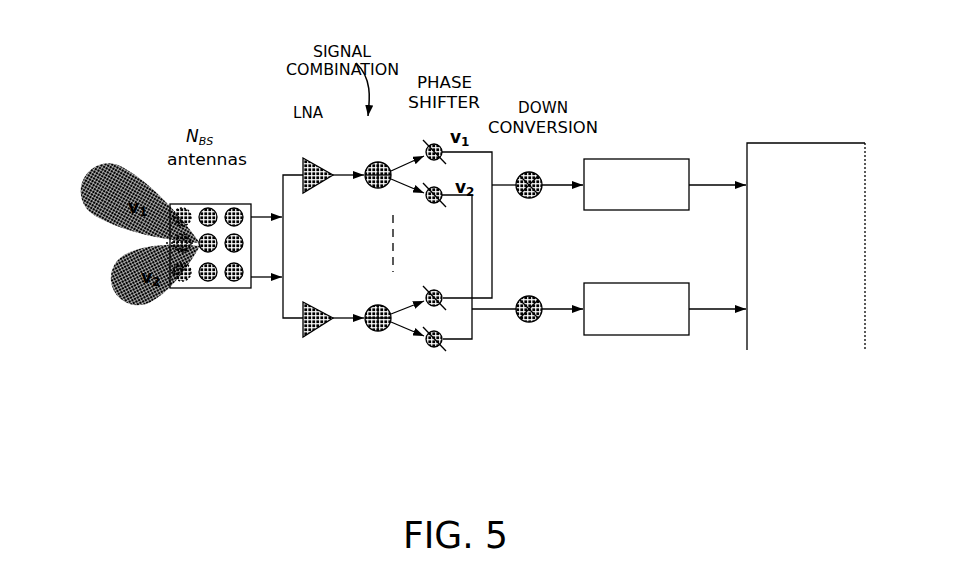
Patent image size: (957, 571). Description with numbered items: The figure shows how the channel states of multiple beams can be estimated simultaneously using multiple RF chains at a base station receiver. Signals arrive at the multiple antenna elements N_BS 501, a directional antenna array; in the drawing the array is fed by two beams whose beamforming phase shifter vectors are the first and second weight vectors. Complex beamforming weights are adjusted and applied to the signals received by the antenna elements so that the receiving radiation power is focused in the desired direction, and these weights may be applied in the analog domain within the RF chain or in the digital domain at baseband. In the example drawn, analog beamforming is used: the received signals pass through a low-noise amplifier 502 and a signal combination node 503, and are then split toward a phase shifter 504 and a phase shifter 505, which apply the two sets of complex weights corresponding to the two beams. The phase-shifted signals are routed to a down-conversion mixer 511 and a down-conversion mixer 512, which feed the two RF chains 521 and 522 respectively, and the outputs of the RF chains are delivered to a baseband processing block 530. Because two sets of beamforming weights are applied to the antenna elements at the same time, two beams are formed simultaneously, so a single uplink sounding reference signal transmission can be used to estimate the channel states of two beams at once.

The multiple antenna elements N_BS 501 is at (206, 204).
The low noise amplifier (LNA) 502 is at (308, 158).
The signal combination / splitter node 503 is at (378, 162).
The phase shifter (beam v1) 504 is at (437, 143).
The phase shifter (beam v2) 505 is at (436, 206).
The down conversion mixer 511 is at (529, 172).
The down conversion mixer 512 is at (529, 296).
The RF chain 521 is at (643, 158).
The RF chain 522 is at (641, 282).
The baseband processing 530 is at (805, 144).